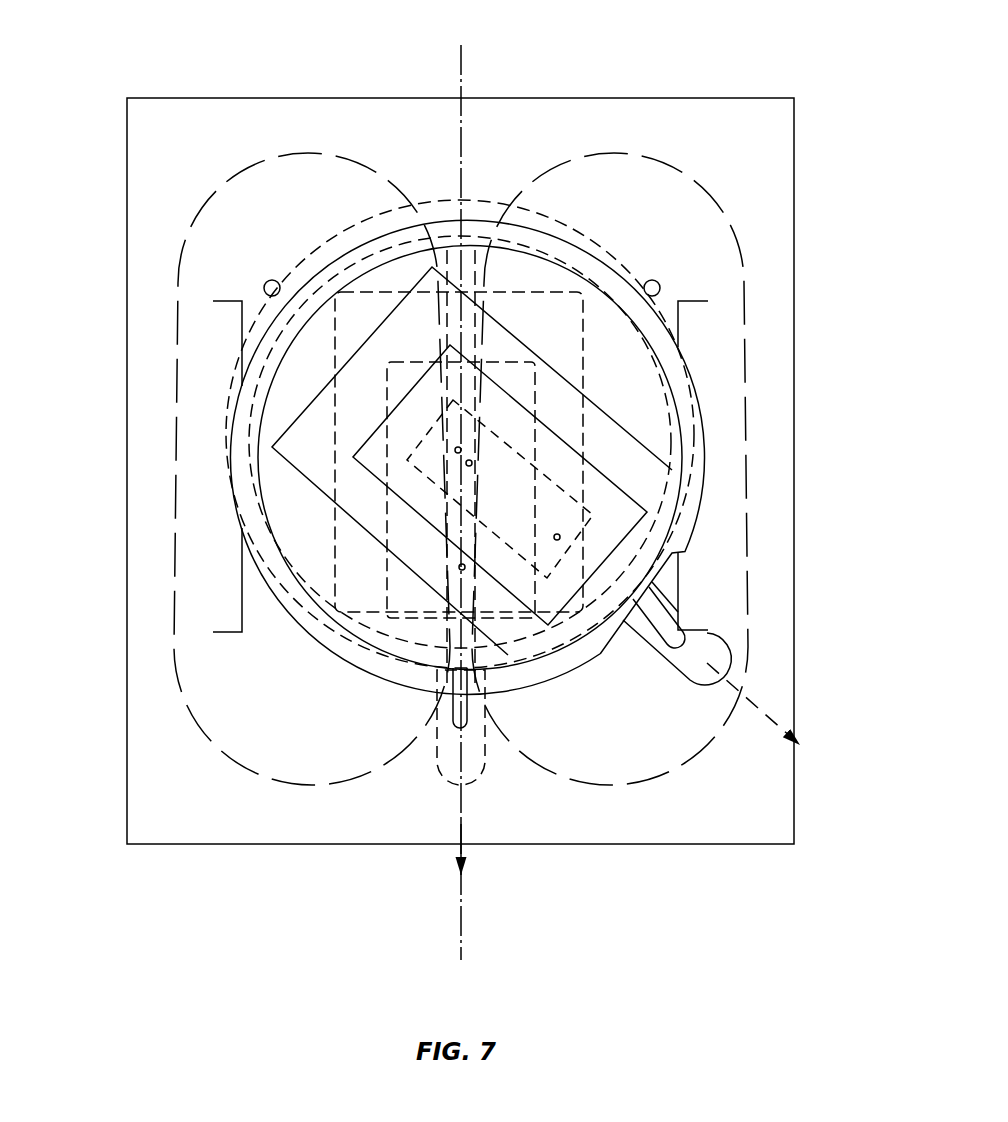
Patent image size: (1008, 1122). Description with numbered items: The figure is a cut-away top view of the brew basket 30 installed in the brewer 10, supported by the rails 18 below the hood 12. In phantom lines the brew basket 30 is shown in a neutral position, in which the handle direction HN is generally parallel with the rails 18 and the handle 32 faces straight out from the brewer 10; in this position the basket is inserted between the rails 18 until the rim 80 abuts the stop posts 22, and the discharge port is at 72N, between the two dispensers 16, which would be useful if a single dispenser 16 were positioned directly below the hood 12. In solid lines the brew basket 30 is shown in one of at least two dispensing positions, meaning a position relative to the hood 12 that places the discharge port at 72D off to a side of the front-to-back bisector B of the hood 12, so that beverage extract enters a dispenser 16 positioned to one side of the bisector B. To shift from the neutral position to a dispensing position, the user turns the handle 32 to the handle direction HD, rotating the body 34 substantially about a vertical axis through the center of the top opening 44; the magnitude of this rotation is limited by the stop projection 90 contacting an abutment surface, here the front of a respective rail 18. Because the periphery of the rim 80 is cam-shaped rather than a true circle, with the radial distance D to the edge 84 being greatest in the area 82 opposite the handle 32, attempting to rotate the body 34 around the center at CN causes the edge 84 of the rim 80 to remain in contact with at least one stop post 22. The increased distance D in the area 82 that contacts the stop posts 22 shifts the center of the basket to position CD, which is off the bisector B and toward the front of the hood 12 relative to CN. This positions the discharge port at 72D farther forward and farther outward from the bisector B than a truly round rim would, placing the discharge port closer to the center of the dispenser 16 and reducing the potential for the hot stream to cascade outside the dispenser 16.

The brewer 10 is at (735, 866).
The hood 12 is at (797, 162).
The dispensers 16 is at (213, 742).
The rails 18 is at (240, 325).
The stop posts 22 is at (264, 283).
The brew basket 30 is at (335, 212).
The handle 32 is at (472, 762).
The body 34 is at (329, 651).
The top opening 44 is at (262, 500).
The discharge port in dispensing position 72D is at (560, 537).
The discharge port in neutral position 72N is at (463, 570).
The rim 80 is at (655, 334).
The area of the rim 82 is at (481, 200).
The edge of the rim 84 is at (323, 250).
The stop projection 90 is at (710, 657).
The front-to-back bisector B is at (458, 64).
The radial distance D is at (460, 447).
The center in neutral position CN is at (455, 450).
The center in dispensing position CD is at (472, 463).
The handle direction in neutral position HN is at (466, 822).
The handle direction in dispensing position HD is at (772, 713).